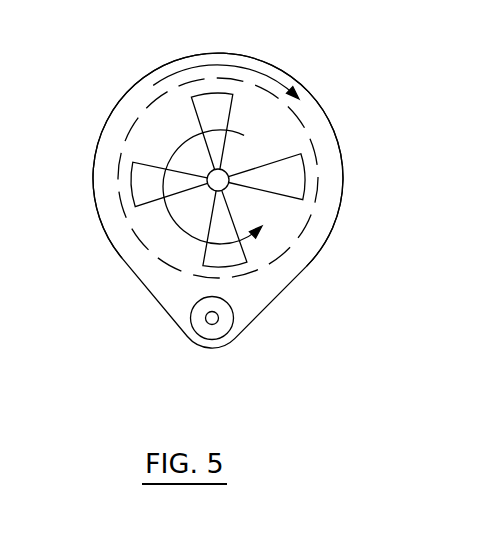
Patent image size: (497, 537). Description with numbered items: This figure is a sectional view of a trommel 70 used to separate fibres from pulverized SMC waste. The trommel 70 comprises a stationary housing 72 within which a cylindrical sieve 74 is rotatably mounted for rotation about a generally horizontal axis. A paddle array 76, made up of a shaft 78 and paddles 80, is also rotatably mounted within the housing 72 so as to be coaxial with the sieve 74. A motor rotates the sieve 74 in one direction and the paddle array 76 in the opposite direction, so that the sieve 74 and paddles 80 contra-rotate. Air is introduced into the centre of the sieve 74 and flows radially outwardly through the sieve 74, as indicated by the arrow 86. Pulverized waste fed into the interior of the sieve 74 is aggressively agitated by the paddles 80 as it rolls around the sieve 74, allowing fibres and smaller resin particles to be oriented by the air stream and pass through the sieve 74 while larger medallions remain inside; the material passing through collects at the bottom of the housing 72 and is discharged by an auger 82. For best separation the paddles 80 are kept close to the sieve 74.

The trommel 70 is at (134, 71).
The stationary housing 72 is at (335, 228).
The cylindrical sieve 74 is at (322, 170).
The paddle array 76 is at (145, 221).
The shaft 78 is at (232, 193).
The paddles 80 is at (284, 163).
The auger 82 is at (214, 338).
The arrow 86 is at (114, 155).